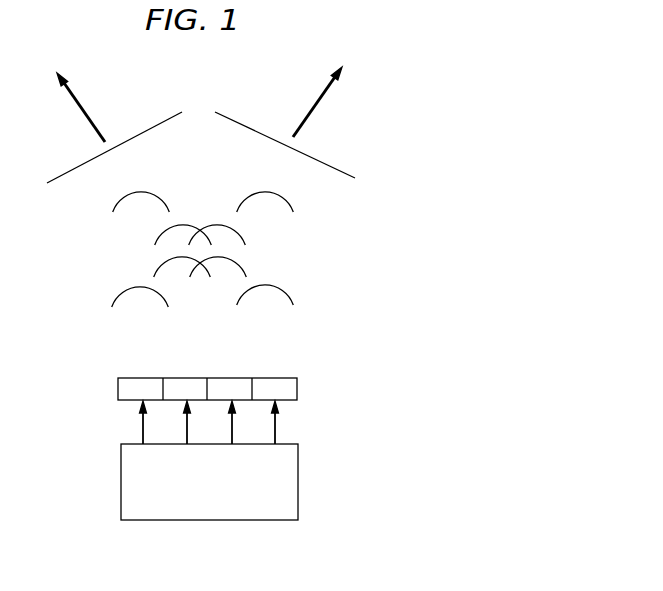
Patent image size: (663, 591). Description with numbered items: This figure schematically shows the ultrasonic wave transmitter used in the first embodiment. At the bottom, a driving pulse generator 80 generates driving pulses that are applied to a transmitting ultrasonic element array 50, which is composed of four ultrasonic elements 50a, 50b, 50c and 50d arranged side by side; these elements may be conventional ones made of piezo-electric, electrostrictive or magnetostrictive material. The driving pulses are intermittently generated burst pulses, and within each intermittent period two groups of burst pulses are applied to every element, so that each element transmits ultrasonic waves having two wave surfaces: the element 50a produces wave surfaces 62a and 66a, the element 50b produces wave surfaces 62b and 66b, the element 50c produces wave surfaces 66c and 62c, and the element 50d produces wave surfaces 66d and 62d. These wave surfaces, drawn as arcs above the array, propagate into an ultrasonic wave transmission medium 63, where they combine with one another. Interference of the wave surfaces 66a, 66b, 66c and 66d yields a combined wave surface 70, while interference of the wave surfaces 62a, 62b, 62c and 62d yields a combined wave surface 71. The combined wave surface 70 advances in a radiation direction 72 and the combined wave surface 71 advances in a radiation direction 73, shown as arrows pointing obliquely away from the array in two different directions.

The transmitting ultrasonic element array 50 is at (310, 386).
The ultrasonic element 50a is at (138, 401).
The ultrasonic element 50b is at (202, 402).
The ultrasonic element 50c is at (243, 402).
The ultrasonic element 50d is at (290, 402).
The wave surface 62a is at (137, 192).
The wave surface 62b is at (178, 225).
The wave surface 62c is at (222, 257).
The wave surface 62d is at (270, 286).
The ultrasonic wave transmission medium 63 is at (51, 236).
The wave surface 66a is at (142, 287).
The wave surface 66b is at (180, 257).
The wave surface 66c is at (217, 225).
The wave surface 66d is at (260, 192).
The combined wave surface 70 is at (157, 124).
The combined wave surface 71 is at (233, 120).
The radiation direction 72 is at (74, 96).
The radiation direction 73 is at (322, 95).
The driving pulse generator 80 is at (300, 460).